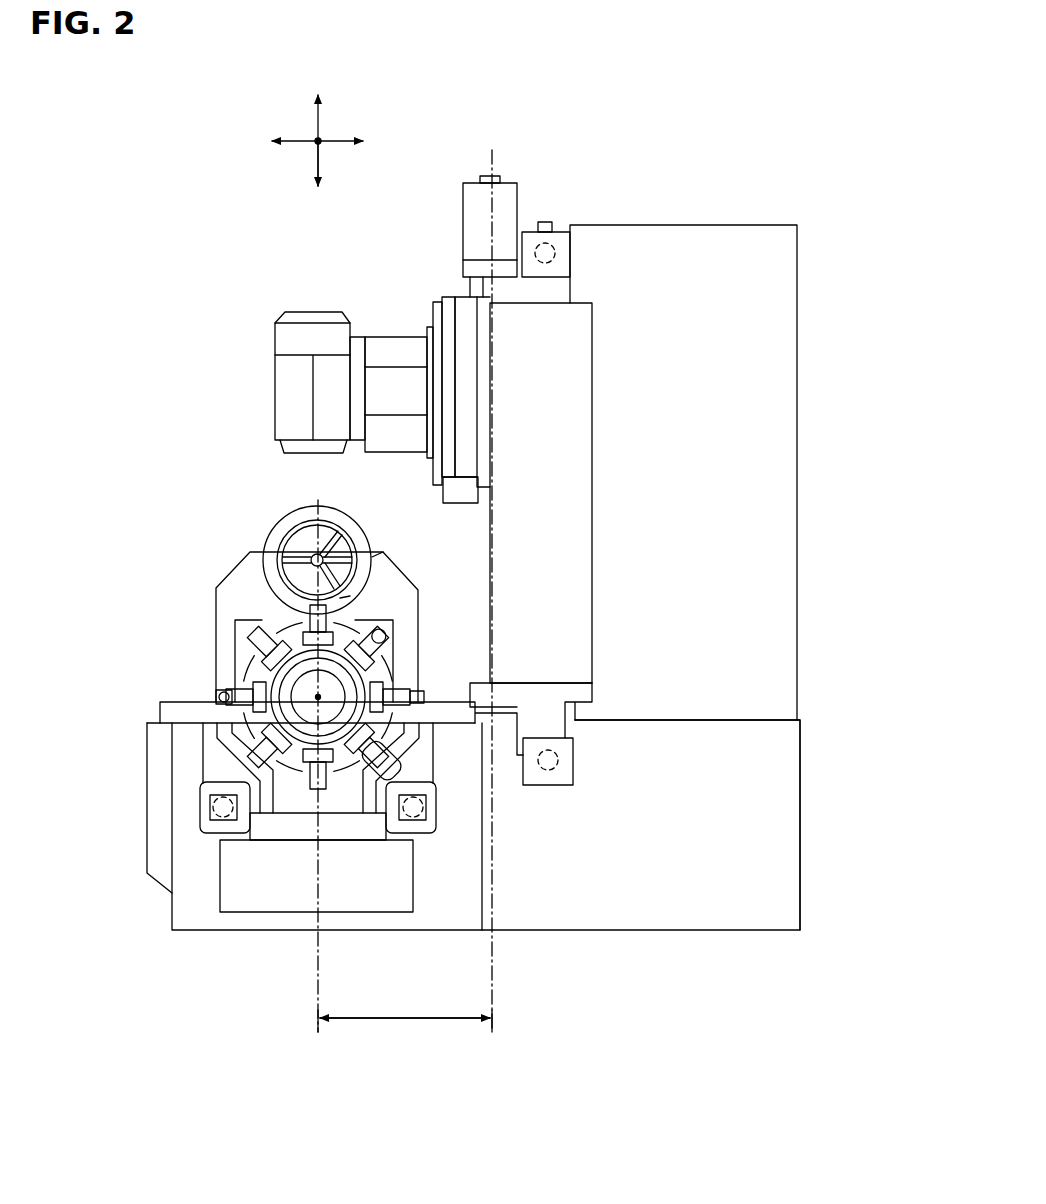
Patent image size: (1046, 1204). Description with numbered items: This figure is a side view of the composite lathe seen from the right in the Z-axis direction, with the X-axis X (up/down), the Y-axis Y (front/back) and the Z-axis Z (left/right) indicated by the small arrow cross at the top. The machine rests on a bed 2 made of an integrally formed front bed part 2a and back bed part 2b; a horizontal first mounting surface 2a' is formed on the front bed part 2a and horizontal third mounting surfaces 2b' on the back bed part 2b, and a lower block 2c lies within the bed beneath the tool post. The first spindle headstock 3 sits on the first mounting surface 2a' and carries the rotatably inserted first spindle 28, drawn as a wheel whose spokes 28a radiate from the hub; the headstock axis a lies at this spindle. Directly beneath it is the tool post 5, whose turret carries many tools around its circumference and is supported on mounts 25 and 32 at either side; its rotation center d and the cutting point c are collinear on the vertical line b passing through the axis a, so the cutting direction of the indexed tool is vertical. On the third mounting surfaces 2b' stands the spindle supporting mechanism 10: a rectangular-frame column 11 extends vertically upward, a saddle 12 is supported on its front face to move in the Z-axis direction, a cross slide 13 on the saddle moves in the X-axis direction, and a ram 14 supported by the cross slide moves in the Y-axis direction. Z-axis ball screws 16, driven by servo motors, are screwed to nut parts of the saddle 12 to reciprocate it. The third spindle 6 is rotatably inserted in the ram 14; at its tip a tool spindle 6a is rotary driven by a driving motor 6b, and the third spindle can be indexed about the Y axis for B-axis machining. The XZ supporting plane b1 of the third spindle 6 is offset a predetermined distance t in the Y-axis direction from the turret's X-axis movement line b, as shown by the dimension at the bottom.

The bed 2 is at (145, 776).
The front bed part 2a is at (128, 808).
The first mounting surface 2a' is at (285, 690).
The back bed part 2b is at (844, 825).
The third mounting surfaces 2b' is at (718, 676).
The bed lower block 2c is at (250, 912).
The first spindle headstock 3 is at (268, 527).
The tool post 5 is at (260, 637).
The third spindle 6 is at (272, 320).
The tool spindle 6a is at (283, 455).
The driving motor 6b is at (275, 372).
The spindle supporting mechanism 10 is at (850, 278).
The column 11 is at (797, 395).
The saddle 12 is at (590, 353).
The cross slide 13 is at (445, 300).
The ram 14 is at (408, 330).
The Z-axis ball screws 16 is at (552, 245).
The left mount 25 is at (212, 822).
The first spindle 28 is at (345, 518).
The hand wheel spokes 28a is at (337, 560).
The right mount 32 is at (415, 838).
The axis a is at (372, 557).
The vertical line b is at (322, 975).
The XZ supporting plane b1 is at (495, 990).
The cutting point c is at (345, 598).
The rotation center d is at (318, 697).
The predetermined distance t is at (410, 1020).
The X-axis X is at (320, 120).
The Y-axis Y is at (293, 145).
The Z-axis Z is at (322, 150).